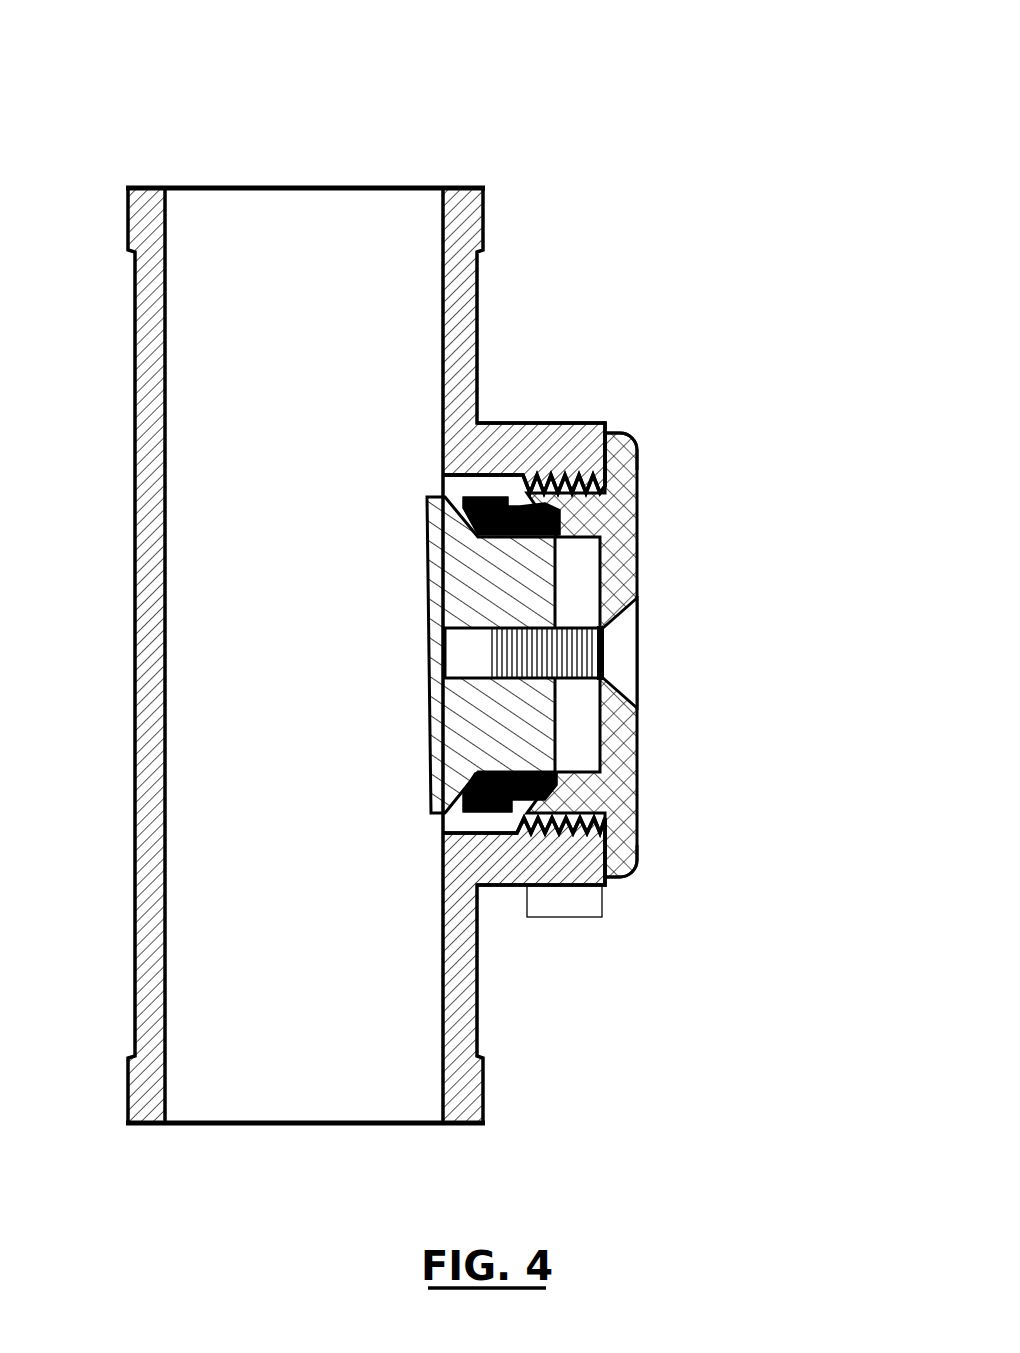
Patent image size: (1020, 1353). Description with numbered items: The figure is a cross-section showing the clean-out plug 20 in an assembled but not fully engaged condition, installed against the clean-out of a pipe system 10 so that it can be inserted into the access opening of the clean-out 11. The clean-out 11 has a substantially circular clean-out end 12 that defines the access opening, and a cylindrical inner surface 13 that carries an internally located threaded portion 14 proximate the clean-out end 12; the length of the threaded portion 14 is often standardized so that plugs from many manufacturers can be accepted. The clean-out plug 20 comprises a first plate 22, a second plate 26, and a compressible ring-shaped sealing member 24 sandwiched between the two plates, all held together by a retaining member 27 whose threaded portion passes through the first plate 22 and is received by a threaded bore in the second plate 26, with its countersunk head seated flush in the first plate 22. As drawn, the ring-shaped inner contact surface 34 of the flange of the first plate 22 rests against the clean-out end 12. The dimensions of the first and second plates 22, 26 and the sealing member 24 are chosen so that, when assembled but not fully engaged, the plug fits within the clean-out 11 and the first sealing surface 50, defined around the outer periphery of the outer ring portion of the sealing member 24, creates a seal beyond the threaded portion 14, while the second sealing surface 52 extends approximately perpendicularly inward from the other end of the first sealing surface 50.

The pipe system 10 is at (429, 561).
The clean-out 11 is at (590, 403).
The clean-out end 12 is at (610, 847).
The cylindrical inner surface 13 is at (488, 493).
The threaded portion 14 is at (565, 917).
The clean-out plug 20 is at (597, 640).
The first plate 22 is at (635, 765).
The sealing member 24 is at (462, 807).
The second plate 26 is at (445, 580).
The retaining member 27 is at (600, 640).
The inner contact surface 34 is at (628, 873).
The first sealing surface 50 is at (512, 497).
The second sealing surface 52 is at (610, 428).